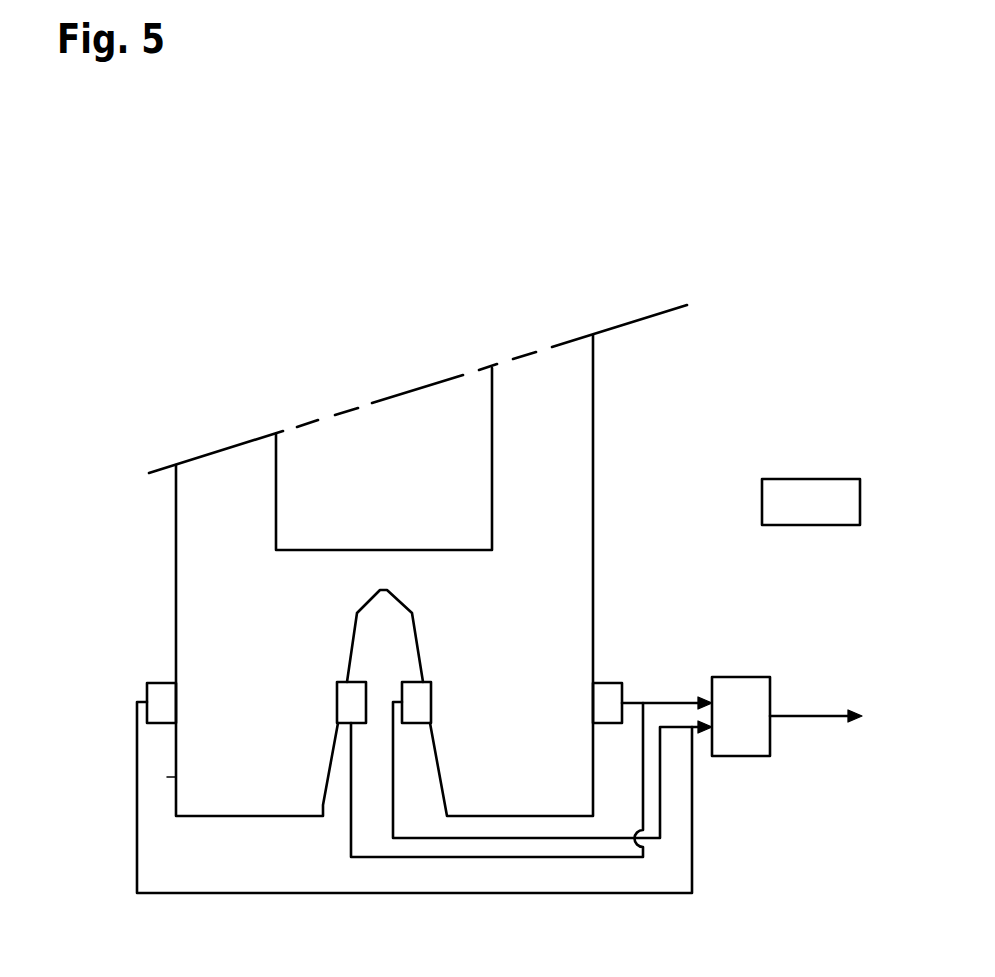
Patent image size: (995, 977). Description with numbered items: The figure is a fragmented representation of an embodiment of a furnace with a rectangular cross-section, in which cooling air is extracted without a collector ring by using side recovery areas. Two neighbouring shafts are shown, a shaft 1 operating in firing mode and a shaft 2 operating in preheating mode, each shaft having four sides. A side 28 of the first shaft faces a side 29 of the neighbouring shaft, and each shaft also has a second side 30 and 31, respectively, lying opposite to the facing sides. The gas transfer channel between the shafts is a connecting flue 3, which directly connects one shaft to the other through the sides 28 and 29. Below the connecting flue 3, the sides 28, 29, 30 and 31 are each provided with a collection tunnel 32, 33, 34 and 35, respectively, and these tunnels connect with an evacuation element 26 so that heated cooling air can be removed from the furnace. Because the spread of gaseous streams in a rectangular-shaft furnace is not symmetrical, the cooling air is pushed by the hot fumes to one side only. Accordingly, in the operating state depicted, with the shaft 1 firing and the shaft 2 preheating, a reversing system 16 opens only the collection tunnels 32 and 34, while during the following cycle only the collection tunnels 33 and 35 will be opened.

The shaft 1 is at (138, 553).
The shaft 2 is at (629, 474).
The connecting flue 3 is at (399, 550).
The reversing system 16 is at (828, 518).
The evacuation element 26 is at (735, 677).
The side 28 is at (330, 777).
The side 29 is at (438, 768).
The second side 30 is at (167, 777).
The second side 31 is at (593, 815).
The collection tunnel 32 is at (357, 688).
The collection tunnel 33 is at (422, 698).
The collection tunnel 34 is at (608, 688).
The collection tunnel 35 is at (155, 682).